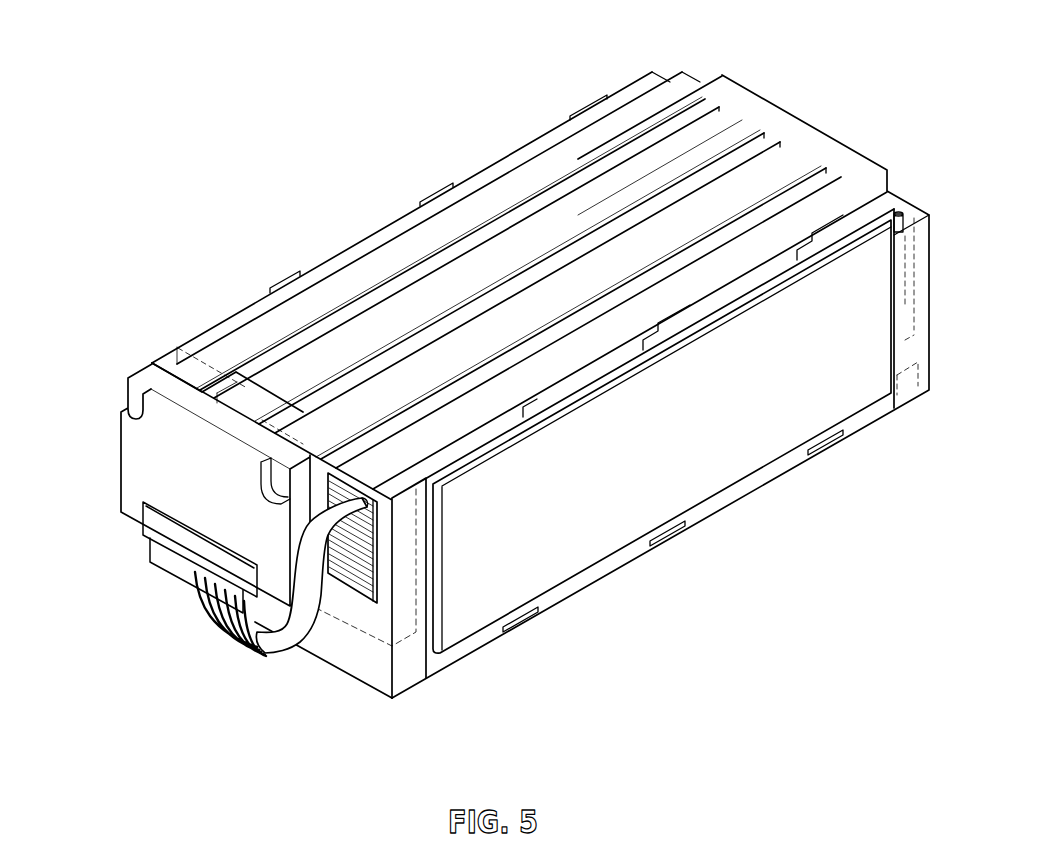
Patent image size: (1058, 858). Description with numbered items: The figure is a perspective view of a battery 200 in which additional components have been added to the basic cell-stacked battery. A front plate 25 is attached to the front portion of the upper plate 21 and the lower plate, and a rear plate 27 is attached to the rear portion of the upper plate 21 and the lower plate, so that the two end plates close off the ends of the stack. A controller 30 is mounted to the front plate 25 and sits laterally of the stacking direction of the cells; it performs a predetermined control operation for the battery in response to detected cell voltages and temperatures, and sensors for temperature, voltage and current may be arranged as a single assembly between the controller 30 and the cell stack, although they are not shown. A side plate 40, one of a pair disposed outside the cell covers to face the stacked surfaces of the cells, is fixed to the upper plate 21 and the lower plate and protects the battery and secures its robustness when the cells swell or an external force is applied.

The battery module 200 is at (812, 98).
The upper plate 21 is at (520, 185).
The rear plate 27 is at (912, 205).
The controller 30 is at (145, 465).
The side plate 40 is at (605, 540).
The front plate 25 is at (415, 678).